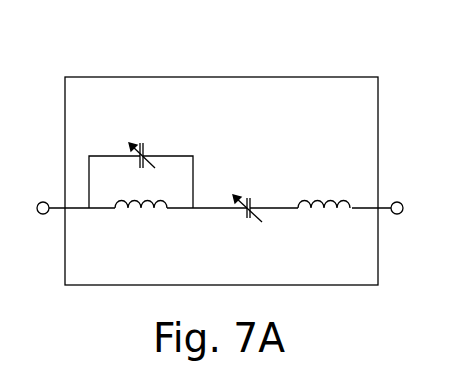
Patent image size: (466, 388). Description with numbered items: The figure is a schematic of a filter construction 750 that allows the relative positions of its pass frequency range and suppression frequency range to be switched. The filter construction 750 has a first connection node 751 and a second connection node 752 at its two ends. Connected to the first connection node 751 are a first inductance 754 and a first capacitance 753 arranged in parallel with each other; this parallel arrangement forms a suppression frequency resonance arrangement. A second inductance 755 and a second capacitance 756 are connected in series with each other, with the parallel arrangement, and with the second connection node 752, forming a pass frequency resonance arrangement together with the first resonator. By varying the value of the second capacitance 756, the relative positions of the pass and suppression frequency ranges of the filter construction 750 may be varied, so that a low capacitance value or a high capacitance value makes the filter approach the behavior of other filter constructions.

The filter construction 750 is at (221, 181).
The first connection node 751 is at (43, 201).
The second connection node 752 is at (397, 201).
The first capacitance 753 is at (143, 154).
The first inductance 754 is at (167, 204).
The second inductance 755 is at (352, 204).
The second capacitance 756 is at (250, 206).